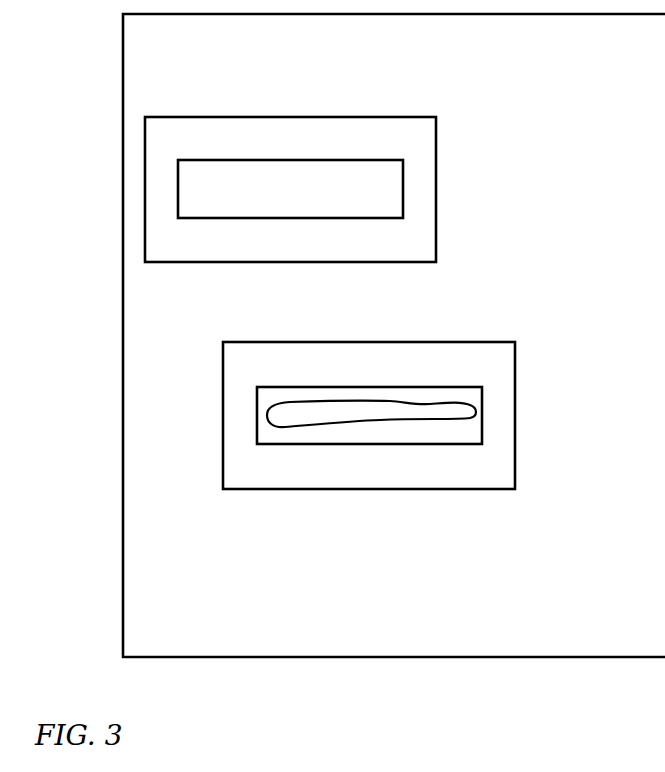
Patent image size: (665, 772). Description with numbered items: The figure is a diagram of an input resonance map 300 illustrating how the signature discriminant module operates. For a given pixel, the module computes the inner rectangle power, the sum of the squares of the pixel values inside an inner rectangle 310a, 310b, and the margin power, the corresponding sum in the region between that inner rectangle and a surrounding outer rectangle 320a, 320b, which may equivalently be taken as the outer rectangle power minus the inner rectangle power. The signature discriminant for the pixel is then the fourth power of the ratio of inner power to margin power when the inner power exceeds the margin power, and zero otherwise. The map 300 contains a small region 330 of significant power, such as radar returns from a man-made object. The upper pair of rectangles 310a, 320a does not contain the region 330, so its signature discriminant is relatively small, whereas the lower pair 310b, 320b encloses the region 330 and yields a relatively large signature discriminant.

The input resonance map 300 is at (527, 658).
The outer rectangle 320a is at (325, 117).
The inner rectangle 310a is at (245, 160).
The outer rectangle 320b is at (404, 342).
The inner rectangle 310b is at (326, 387).
The region of significant power 330 is at (392, 421).